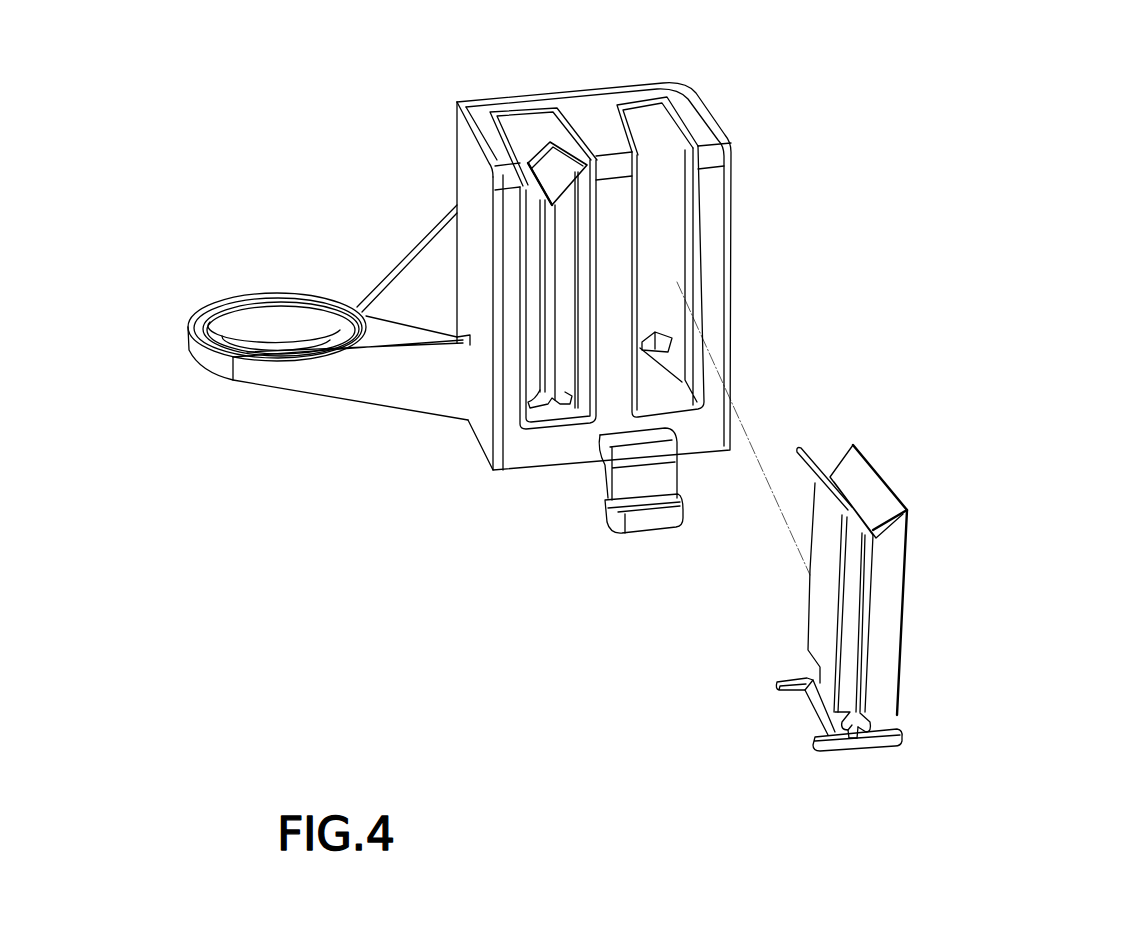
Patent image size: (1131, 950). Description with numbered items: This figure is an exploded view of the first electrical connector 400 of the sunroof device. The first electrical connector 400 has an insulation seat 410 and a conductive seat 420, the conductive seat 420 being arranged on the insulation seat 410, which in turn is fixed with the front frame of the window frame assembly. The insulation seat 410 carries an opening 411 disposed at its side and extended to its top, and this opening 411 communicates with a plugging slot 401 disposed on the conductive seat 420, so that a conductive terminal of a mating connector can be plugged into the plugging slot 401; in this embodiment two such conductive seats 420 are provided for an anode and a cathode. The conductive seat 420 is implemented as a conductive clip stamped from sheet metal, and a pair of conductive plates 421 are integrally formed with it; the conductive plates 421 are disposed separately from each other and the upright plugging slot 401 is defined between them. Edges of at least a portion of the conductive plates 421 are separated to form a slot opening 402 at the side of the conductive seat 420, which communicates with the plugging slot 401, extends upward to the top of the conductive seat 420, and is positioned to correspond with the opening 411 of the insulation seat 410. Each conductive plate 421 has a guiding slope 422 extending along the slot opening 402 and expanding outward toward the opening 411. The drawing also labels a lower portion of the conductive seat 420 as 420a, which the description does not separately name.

The first electrical connector 400 is at (1015, 296).
The insulation seat 410 is at (736, 223).
The opening 411 is at (688, 258).
The plugging slot 401 is at (543, 192).
The slot opening 402 is at (550, 345).
The conductive seat 420 is at (558, 176).
The terminal foot 420a is at (853, 727).
The conductive plate 421 is at (857, 632).
The guiding slope 422 is at (563, 280).